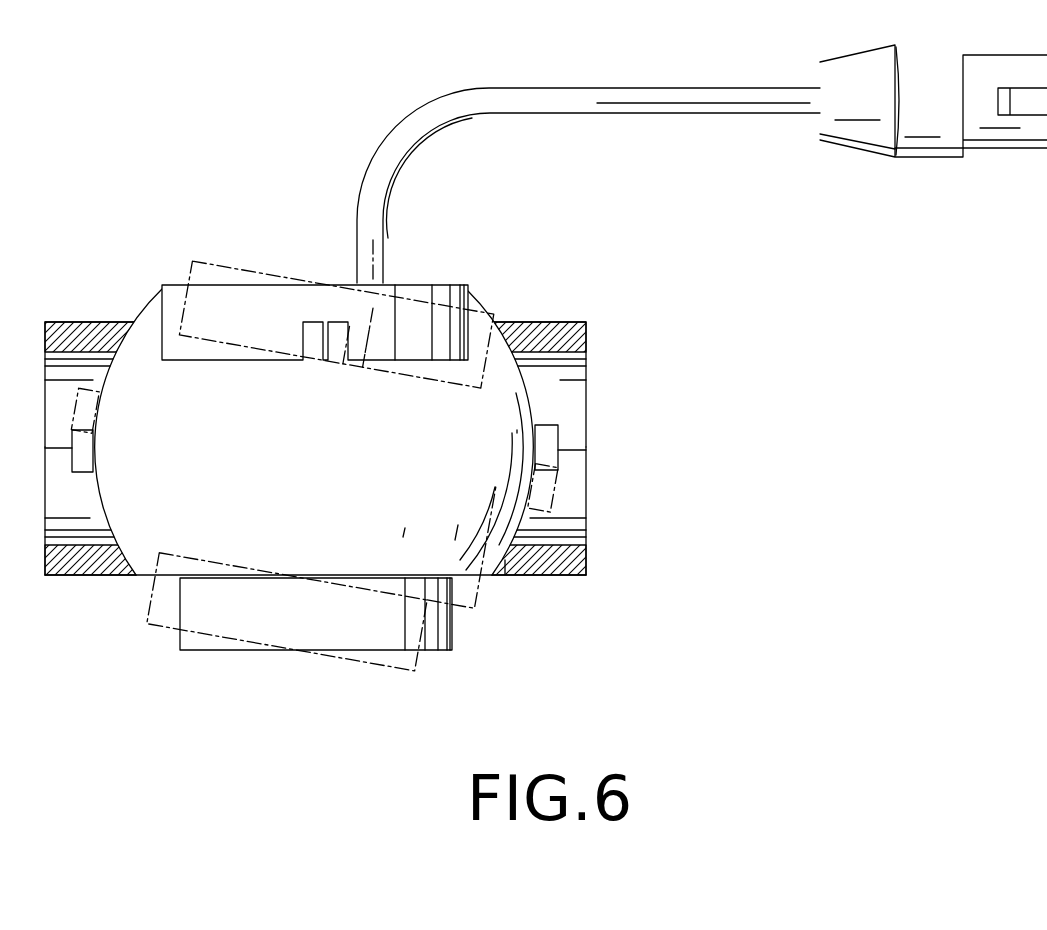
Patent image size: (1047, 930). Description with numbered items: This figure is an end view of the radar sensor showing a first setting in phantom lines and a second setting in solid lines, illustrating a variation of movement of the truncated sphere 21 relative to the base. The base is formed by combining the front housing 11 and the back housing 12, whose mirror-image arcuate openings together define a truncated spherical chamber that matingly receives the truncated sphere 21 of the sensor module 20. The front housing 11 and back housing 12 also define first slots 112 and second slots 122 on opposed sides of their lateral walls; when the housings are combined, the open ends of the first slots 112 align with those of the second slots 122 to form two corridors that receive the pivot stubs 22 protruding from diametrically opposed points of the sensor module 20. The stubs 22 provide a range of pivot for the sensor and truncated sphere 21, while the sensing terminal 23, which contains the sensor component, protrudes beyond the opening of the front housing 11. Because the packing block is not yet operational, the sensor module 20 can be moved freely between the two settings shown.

The front housing 11 is at (547, 575).
The back housing 12 is at (562, 323).
The first slot 112 is at (582, 508).
The second slot 122 is at (560, 378).
The sensor module 20 is at (253, 290).
The truncated sphere 21 is at (123, 378).
The pivot stub 22 is at (555, 435).
The sensing terminal 23 is at (215, 643).